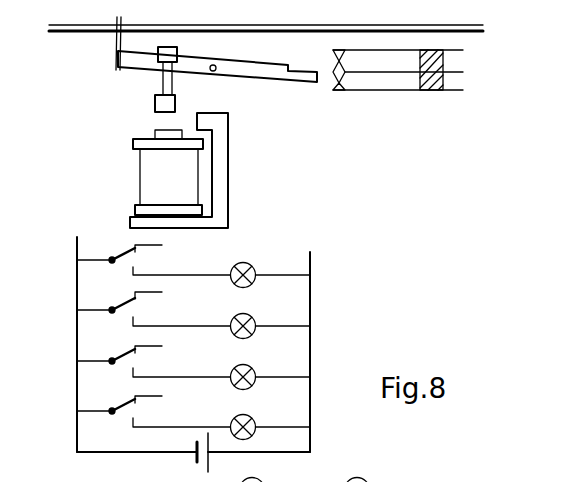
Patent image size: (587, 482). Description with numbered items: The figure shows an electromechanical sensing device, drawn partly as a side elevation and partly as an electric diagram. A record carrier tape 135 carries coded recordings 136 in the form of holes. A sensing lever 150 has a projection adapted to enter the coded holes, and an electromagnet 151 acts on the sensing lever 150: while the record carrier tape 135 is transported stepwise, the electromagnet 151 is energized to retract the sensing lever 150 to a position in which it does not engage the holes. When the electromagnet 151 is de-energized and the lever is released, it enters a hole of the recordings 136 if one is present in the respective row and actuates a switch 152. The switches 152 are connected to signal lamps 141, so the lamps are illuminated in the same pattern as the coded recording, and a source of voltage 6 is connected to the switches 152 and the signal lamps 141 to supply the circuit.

The record carrier tape 135 is at (66, 33).
The recordings 136 is at (116, 36).
The sensing lever 150 is at (268, 70).
The electromagnet 151 is at (145, 182).
The switch 152 is at (365, 83).
The signal lamp 141 is at (251, 263).
The source of voltage 6 is at (193, 457).